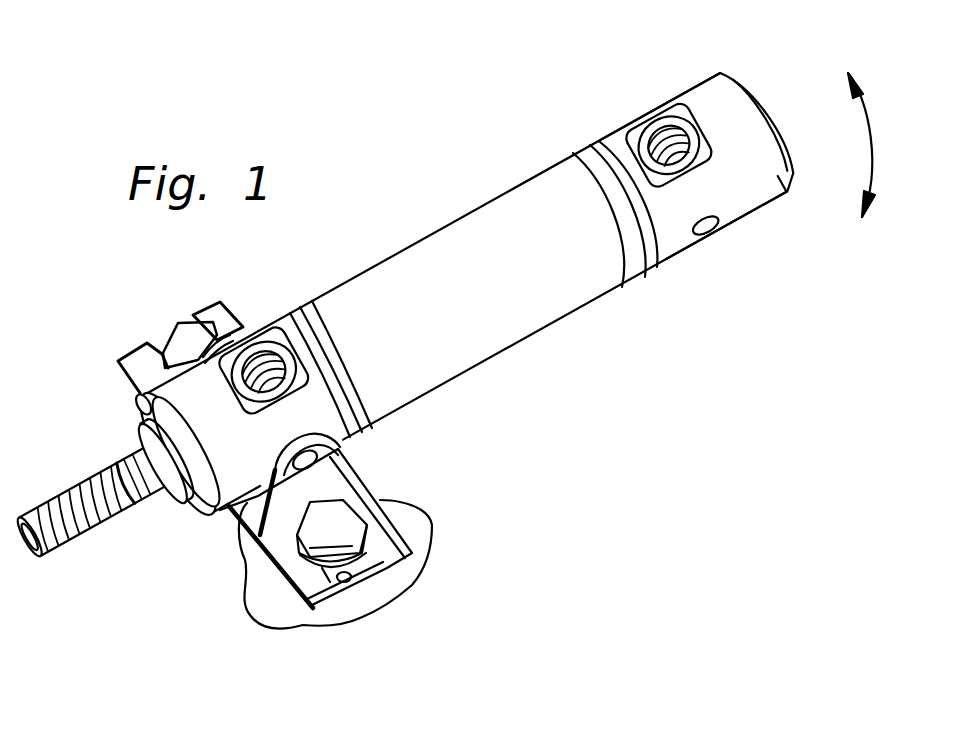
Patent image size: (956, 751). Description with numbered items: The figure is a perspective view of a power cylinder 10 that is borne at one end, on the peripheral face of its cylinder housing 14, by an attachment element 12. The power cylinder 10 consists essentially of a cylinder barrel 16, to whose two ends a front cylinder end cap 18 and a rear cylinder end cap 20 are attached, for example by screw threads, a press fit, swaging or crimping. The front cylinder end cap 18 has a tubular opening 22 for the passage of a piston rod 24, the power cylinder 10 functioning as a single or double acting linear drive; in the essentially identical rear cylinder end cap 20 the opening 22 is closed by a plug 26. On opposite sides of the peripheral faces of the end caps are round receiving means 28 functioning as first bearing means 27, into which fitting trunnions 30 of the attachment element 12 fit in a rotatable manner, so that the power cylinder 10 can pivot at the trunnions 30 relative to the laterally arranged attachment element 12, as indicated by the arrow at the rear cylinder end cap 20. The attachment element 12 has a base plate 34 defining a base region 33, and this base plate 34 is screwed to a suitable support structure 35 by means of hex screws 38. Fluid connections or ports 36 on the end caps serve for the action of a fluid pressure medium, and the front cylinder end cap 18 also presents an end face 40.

The power cylinder 10 is at (420, 213).
The attachment element 12 is at (283, 562).
The cylinder housing 14 is at (473, 289).
The cylinder barrel 16 is at (552, 318).
The front cylinder end cap 18 is at (213, 513).
The rear cylinder end cap 20 is at (707, 93).
The tubular opening 22 is at (163, 493).
The piston rod 24 is at (50, 507).
The plug 26 is at (760, 100).
The first bearing means 27 is at (708, 240).
The round receiving means 28 is at (713, 268).
The fitting trunnions 30 is at (327, 443).
The base region 33 is at (215, 473).
The base plate 34 is at (226, 508).
The support structure 35 is at (418, 537).
The fluid connections or ports 36 is at (657, 143).
The hex screws 38 is at (330, 535).
The end face 40 is at (146, 410).